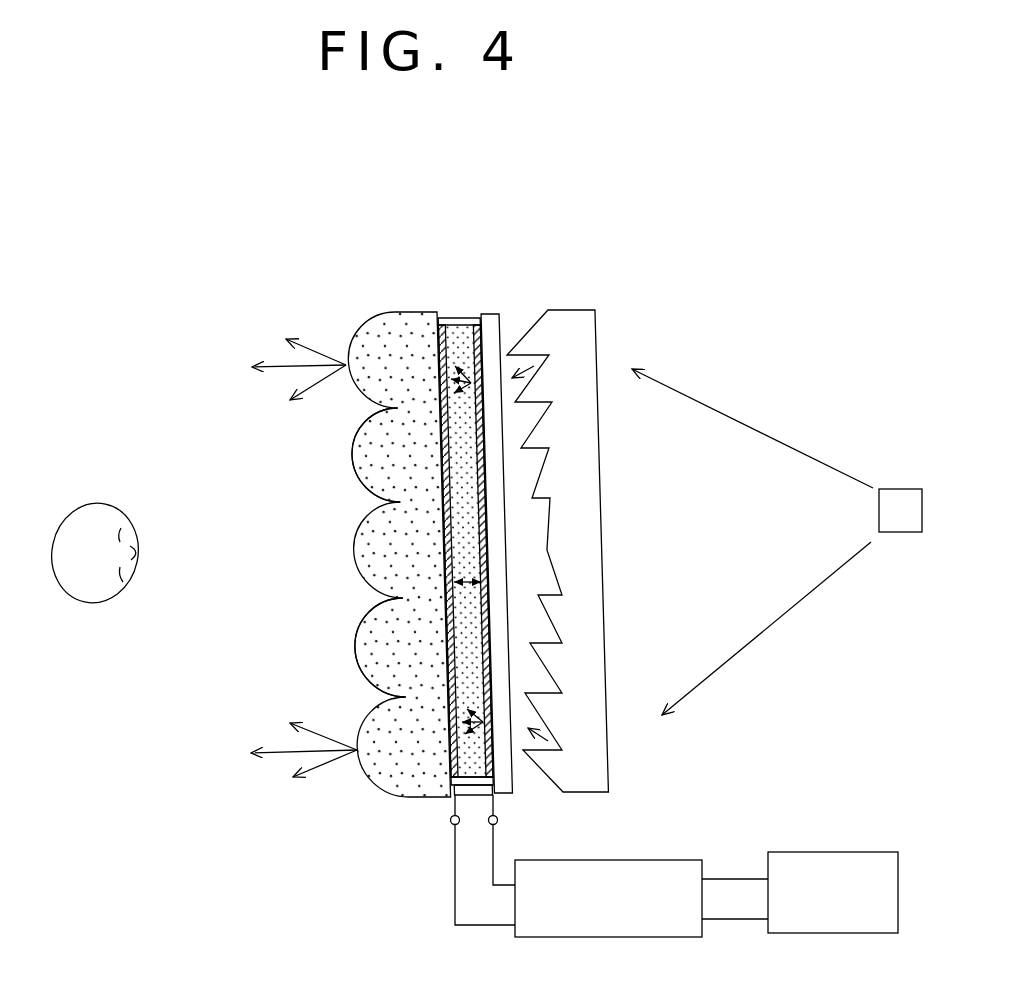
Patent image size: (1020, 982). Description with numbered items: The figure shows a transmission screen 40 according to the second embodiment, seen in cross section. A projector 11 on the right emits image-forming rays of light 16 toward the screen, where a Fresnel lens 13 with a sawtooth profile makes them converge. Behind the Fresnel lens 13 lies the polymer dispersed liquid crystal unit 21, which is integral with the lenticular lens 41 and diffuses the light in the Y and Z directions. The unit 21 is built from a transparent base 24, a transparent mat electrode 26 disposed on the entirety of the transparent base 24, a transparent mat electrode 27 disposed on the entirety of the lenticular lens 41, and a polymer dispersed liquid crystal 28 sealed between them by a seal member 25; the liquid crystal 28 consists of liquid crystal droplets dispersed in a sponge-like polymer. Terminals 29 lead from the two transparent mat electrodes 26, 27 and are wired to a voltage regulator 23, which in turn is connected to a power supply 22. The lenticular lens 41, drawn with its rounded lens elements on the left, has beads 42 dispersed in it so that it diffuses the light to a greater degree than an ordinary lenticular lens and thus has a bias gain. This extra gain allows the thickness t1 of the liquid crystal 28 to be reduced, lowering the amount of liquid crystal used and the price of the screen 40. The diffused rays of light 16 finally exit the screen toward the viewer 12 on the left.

The transmission screen 40 is at (608, 193).
The lenticular lens 41 is at (398, 312).
The beads 42 is at (378, 638).
The transparent mat electrode 27 is at (398, 445).
The polymer dispersed liquid crystal unit 21 is at (505, 260).
The seal member 25 is at (458, 316).
The transparent mat electrode 26 is at (494, 344).
The polymer dispersed liquid crystal 28 is at (467, 690).
The transparent base 24 is at (490, 313).
The Fresnel lens 13 is at (577, 310).
The image-forming rays of light 16 is at (755, 428).
The projector 11 is at (898, 534).
The viewer 12 is at (95, 606).
The terminals 29 is at (450, 822).
The voltage regulator 23 is at (596, 859).
The power supply 22 is at (812, 852).
The thickness t1 is at (476, 574).